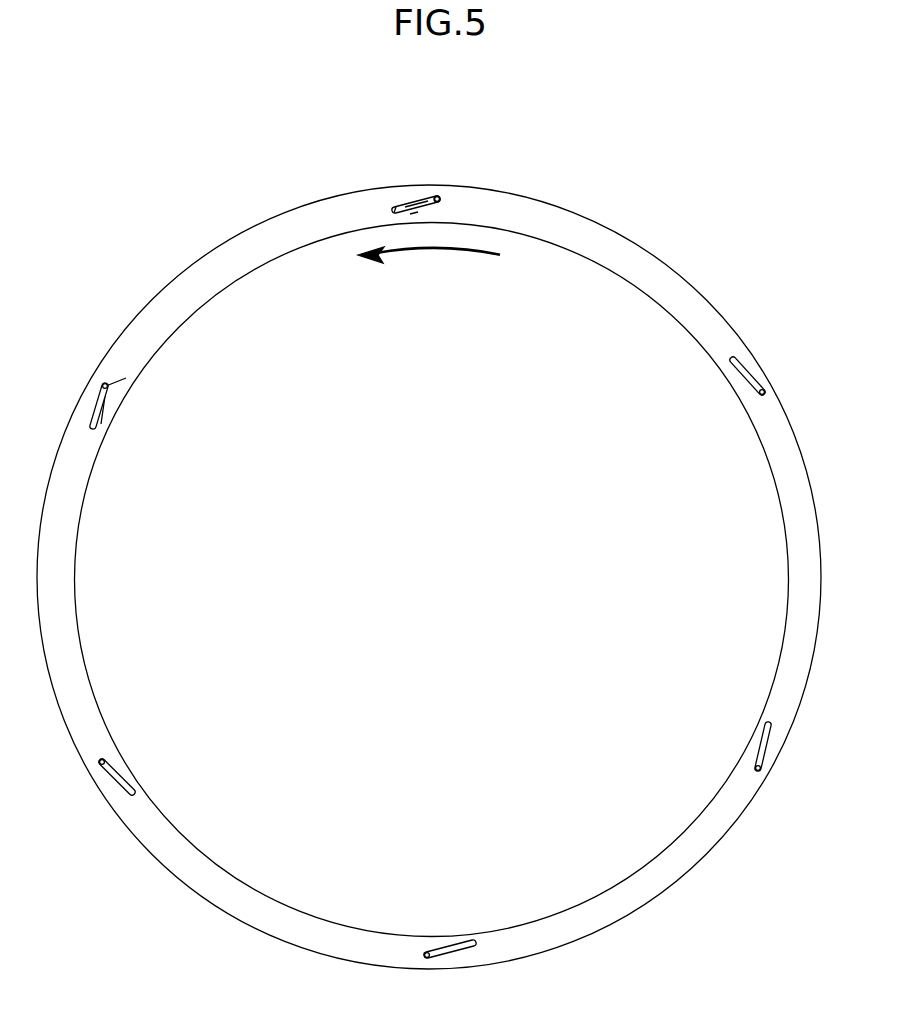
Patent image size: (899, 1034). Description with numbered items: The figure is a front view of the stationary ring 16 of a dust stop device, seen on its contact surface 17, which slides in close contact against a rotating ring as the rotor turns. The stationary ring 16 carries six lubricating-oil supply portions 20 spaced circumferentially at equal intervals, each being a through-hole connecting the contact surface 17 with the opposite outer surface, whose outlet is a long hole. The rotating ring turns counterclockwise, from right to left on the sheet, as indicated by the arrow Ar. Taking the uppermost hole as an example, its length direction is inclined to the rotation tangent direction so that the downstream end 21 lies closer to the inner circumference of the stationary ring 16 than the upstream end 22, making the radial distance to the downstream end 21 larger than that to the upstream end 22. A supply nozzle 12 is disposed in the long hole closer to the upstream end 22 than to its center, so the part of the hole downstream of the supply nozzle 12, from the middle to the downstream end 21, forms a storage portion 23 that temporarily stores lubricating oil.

The supply nozzle 12 is at (436, 194).
The stationary ring 16 is at (720, 312).
The contact surface 17 is at (210, 273).
The lubricating-oil supply portion 20 is at (421, 196).
The downstream end 21 is at (402, 207).
The upstream end 22 is at (439, 197).
The storage portion 23 is at (413, 211).
The arrow indicating rotation direction Ar is at (481, 255).